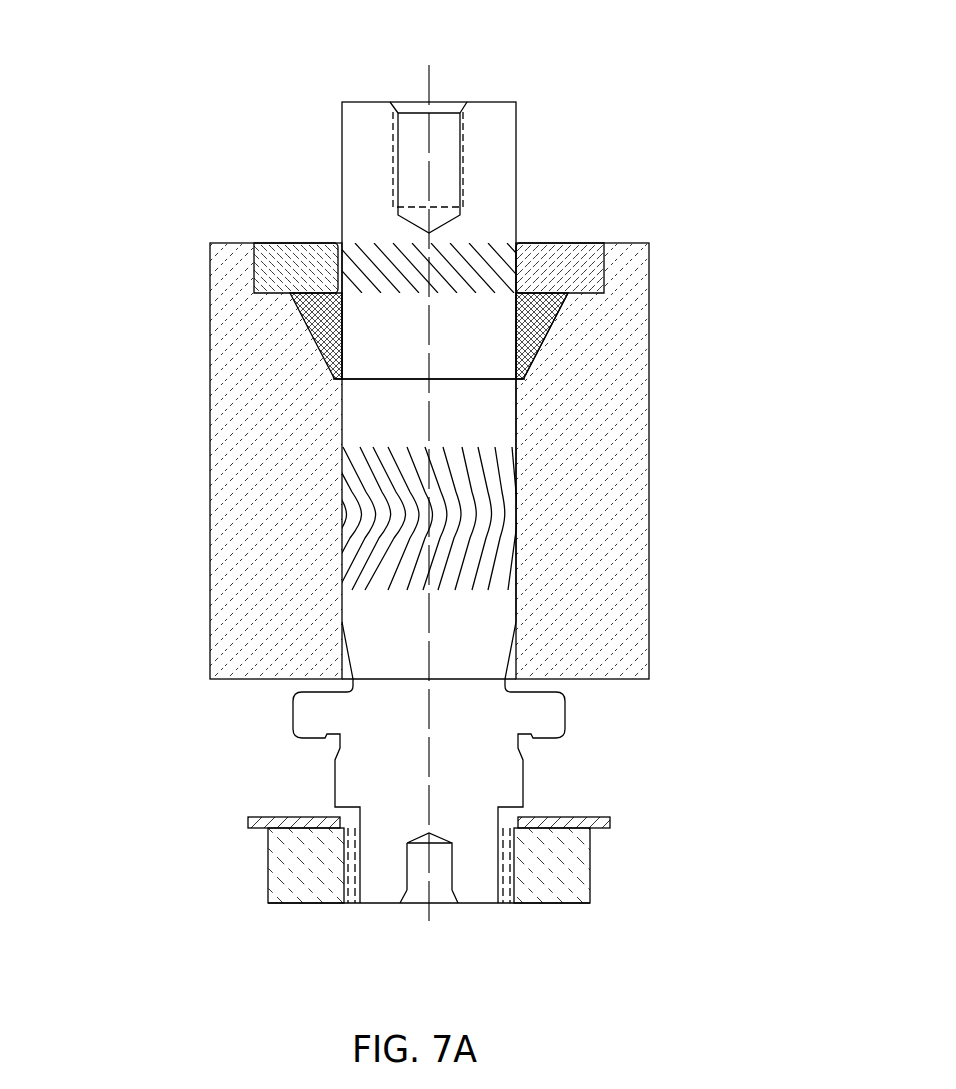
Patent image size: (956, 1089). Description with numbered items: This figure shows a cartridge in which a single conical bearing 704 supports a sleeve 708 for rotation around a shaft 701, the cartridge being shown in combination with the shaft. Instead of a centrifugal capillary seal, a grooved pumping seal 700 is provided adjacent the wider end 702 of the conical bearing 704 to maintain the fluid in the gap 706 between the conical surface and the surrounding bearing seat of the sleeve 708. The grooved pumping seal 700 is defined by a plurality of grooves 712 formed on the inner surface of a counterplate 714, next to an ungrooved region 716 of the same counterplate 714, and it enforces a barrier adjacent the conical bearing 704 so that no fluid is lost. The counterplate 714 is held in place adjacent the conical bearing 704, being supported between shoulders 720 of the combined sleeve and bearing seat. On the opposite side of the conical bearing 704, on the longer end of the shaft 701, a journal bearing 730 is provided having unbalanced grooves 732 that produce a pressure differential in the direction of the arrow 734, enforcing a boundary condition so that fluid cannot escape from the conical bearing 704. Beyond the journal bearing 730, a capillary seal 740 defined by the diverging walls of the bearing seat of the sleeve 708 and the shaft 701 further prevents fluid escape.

The grooved pumping seal 700 is at (588, 257).
The shaft 701 is at (373, 122).
The wider end 702 is at (563, 310).
The conical bearing 704 is at (550, 320).
The gap 706 is at (540, 353).
The sleeve 708 is at (640, 492).
The grooves 712 is at (483, 266).
The counterplate 714 is at (300, 258).
The ungrooved region 716 is at (375, 293).
The shoulders 720 is at (226, 262).
The journal bearing 730 is at (517, 567).
The unbalanced grooves 732 is at (370, 563).
The arrow 734 is at (230, 482).
The capillary seal 740 is at (520, 667).